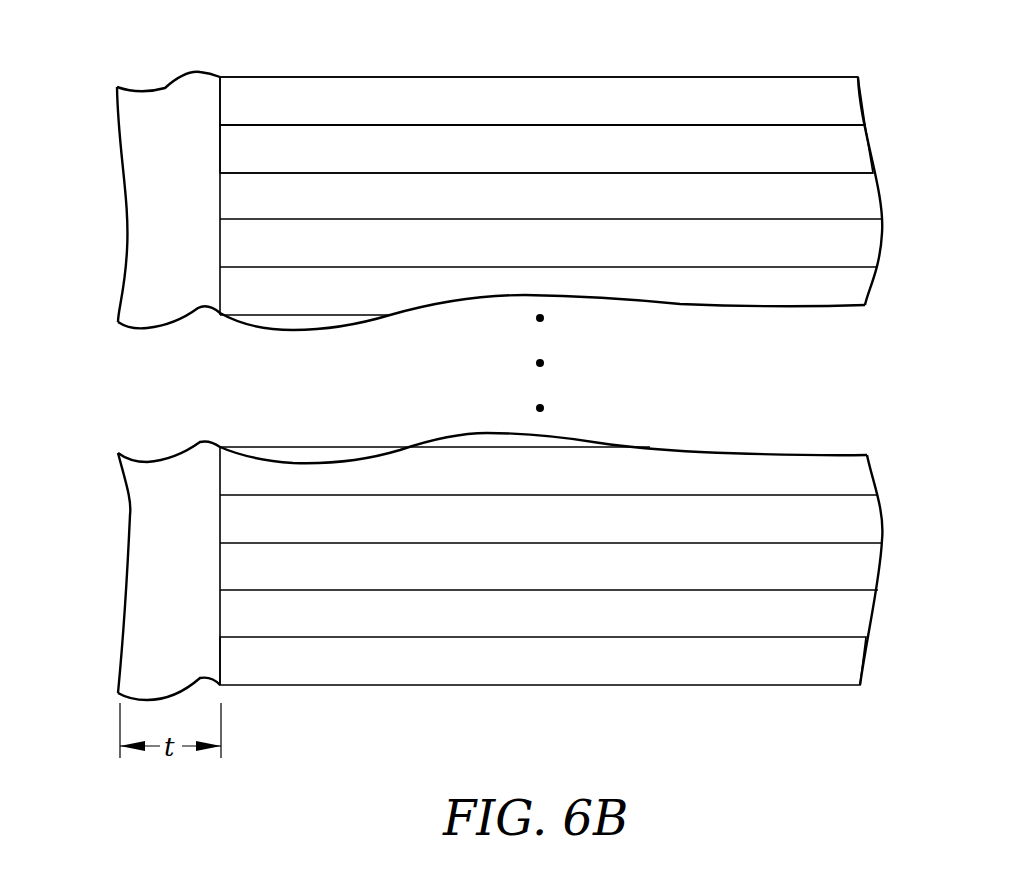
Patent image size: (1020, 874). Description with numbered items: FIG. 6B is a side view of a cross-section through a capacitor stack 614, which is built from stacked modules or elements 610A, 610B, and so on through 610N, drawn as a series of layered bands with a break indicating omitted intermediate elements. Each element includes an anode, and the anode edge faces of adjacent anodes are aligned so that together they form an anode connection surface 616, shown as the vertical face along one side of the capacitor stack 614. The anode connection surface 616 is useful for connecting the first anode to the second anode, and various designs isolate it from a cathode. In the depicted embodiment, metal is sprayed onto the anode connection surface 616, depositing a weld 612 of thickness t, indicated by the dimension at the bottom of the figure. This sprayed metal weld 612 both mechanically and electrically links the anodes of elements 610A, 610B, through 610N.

The weld 612 is at (162, 70).
The capacitor stack 614 is at (530, 63).
The anode connection surface 616 is at (217, 197).
The element 610A is at (851, 99).
The element 610B is at (859, 147).
The element 610N is at (853, 659).